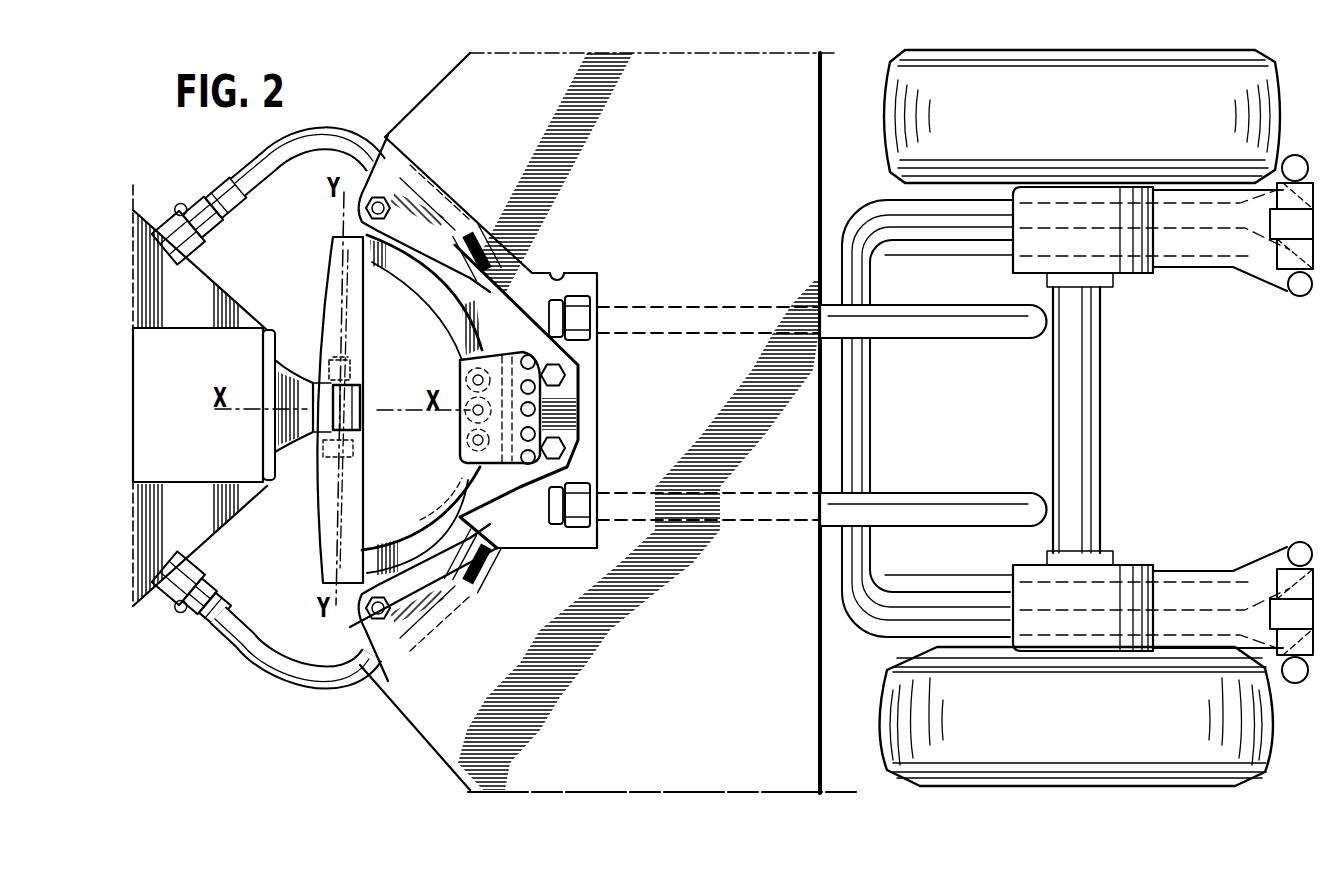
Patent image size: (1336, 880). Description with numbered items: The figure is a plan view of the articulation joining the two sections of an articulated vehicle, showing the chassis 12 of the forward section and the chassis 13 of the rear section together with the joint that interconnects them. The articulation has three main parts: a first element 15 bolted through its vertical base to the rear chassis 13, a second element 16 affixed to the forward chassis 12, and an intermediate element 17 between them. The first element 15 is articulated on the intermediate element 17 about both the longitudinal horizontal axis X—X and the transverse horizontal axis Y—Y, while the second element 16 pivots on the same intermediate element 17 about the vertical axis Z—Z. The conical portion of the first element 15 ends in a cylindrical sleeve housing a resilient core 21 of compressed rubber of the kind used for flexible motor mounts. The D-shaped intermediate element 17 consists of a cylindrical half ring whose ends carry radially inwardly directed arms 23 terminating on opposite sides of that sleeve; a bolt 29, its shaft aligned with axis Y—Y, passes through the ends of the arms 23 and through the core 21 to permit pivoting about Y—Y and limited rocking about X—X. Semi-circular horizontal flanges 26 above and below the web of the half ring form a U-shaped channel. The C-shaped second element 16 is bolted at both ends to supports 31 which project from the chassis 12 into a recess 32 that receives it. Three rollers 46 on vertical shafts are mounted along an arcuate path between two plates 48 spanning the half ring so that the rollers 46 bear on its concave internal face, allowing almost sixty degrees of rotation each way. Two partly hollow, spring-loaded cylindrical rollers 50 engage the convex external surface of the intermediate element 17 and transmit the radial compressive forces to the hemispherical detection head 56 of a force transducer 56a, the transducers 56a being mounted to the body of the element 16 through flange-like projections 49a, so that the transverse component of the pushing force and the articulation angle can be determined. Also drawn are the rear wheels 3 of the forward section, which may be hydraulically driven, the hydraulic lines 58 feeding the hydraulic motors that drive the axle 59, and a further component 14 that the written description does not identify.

The rear wheels 3 is at (903, 98).
The chassis 12 is at (605, 423).
The chassis 13 is at (204, 405).
The hydraulic hose 14 is at (278, 200).
The first element 15 is at (290, 452).
The second element 16 is at (563, 403).
The intermediate element 17 is at (371, 519).
The resilient core 21 is at (361, 410).
The arms 23 is at (331, 303).
The semi-circular horizontal flanges 26 is at (468, 473).
The bolt 29 is at (360, 361).
The supports 31 is at (398, 173).
The recess 32 is at (557, 274).
The rollers 46 is at (455, 386).
The plates 48 is at (538, 421).
The flange-like projections 49a is at (448, 566).
The cylindrical rollers 50 is at (493, 594).
The hemispherical detection head 56 is at (508, 573).
The force transducer 56a is at (506, 560).
The hydraulic lines 58 is at (975, 341).
The axle 59 is at (1088, 387).